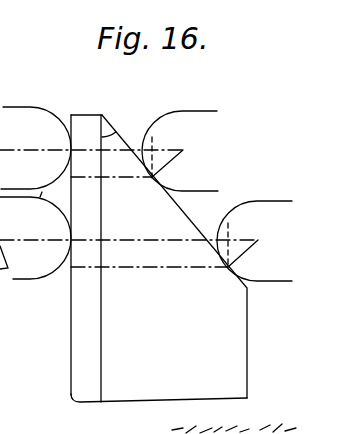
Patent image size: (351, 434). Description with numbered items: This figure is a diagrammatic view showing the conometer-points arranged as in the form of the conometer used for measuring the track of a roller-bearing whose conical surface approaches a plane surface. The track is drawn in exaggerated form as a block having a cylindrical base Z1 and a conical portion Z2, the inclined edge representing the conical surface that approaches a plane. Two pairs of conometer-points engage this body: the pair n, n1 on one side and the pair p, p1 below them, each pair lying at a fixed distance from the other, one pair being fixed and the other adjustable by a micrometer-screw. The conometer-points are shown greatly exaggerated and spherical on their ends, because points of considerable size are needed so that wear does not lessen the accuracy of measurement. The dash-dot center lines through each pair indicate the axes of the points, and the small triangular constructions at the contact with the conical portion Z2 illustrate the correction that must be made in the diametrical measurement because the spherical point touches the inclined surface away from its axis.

The conometer-point n is at (42, 123).
The conometer-point n1 is at (187, 135).
The conometer-point p is at (43, 267).
The conometer-point p1 is at (272, 277).
The cylindrical base Z1 is at (71, 362).
The conical portion Z2 is at (199, 256).